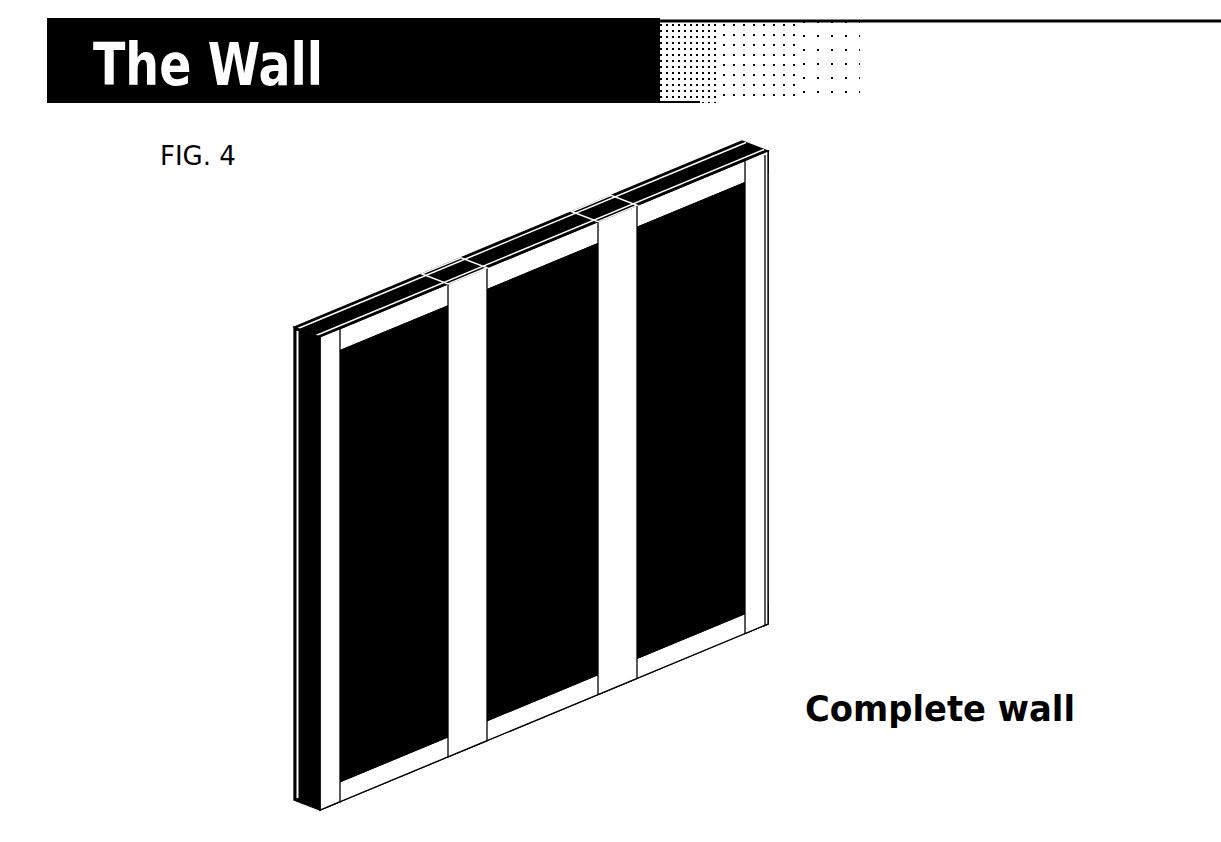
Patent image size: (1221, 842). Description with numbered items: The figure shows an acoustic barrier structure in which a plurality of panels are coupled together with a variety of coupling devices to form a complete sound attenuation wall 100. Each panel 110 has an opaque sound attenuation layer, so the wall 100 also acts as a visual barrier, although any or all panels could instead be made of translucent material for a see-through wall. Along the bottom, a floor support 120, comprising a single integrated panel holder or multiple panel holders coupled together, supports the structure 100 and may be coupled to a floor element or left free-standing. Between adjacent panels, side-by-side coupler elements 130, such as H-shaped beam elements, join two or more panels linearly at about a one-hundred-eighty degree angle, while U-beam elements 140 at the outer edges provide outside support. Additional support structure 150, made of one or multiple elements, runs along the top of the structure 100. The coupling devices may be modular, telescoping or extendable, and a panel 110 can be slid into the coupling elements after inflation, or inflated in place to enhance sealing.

The sound attenuation wall 100 is at (593, 484).
The panel 110 is at (583, 680).
The floor support 120 is at (387, 785).
The side-by-side coupler element 130 is at (463, 698).
The U-beam element 140 is at (305, 548).
The additional support structure 150 is at (385, 290).